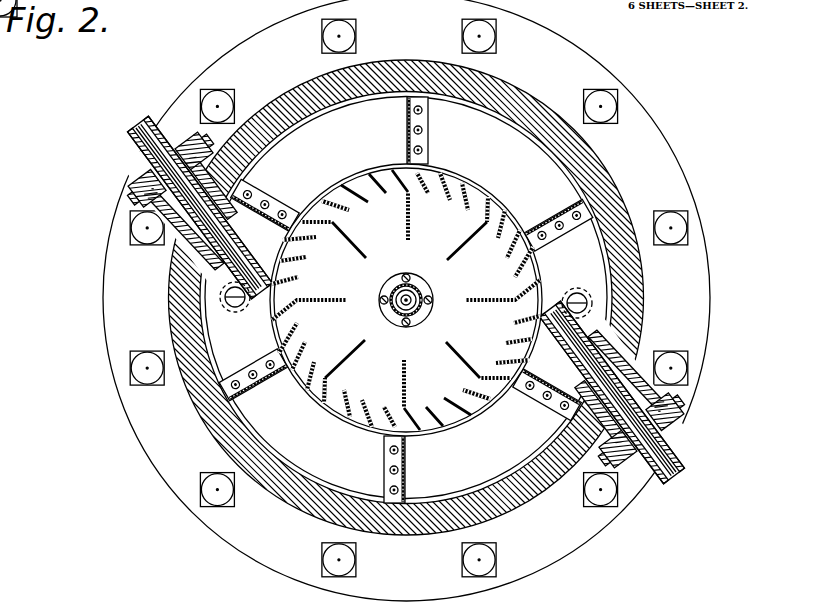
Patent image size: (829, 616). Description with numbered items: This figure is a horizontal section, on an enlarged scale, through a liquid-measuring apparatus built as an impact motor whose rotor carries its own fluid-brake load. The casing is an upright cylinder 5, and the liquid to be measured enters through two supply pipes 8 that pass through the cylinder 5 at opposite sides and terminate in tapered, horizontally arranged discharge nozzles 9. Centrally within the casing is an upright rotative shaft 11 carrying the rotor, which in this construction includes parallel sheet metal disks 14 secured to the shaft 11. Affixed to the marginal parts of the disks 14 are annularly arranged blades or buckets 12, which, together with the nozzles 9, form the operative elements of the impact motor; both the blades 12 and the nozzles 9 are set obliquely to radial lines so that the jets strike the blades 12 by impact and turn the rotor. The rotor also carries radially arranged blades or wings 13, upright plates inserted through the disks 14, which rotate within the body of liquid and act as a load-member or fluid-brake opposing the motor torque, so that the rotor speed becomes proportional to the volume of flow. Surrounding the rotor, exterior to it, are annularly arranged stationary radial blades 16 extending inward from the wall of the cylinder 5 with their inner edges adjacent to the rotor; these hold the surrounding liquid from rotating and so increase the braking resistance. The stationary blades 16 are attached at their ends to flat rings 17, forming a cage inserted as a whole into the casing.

The upright cylinder 5 is at (530, 107).
The supply pipes 8 is at (133, 127).
The discharge nozzles 9 is at (240, 258).
The rotative shaft 11 is at (394, 304).
The blades or buckets 12 is at (300, 346).
The blades or wings 13 is at (367, 256).
The sheet metal disks 14 is at (466, 402).
The stationary radial blades 16 is at (409, 117).
The flat rings 17 is at (284, 124).